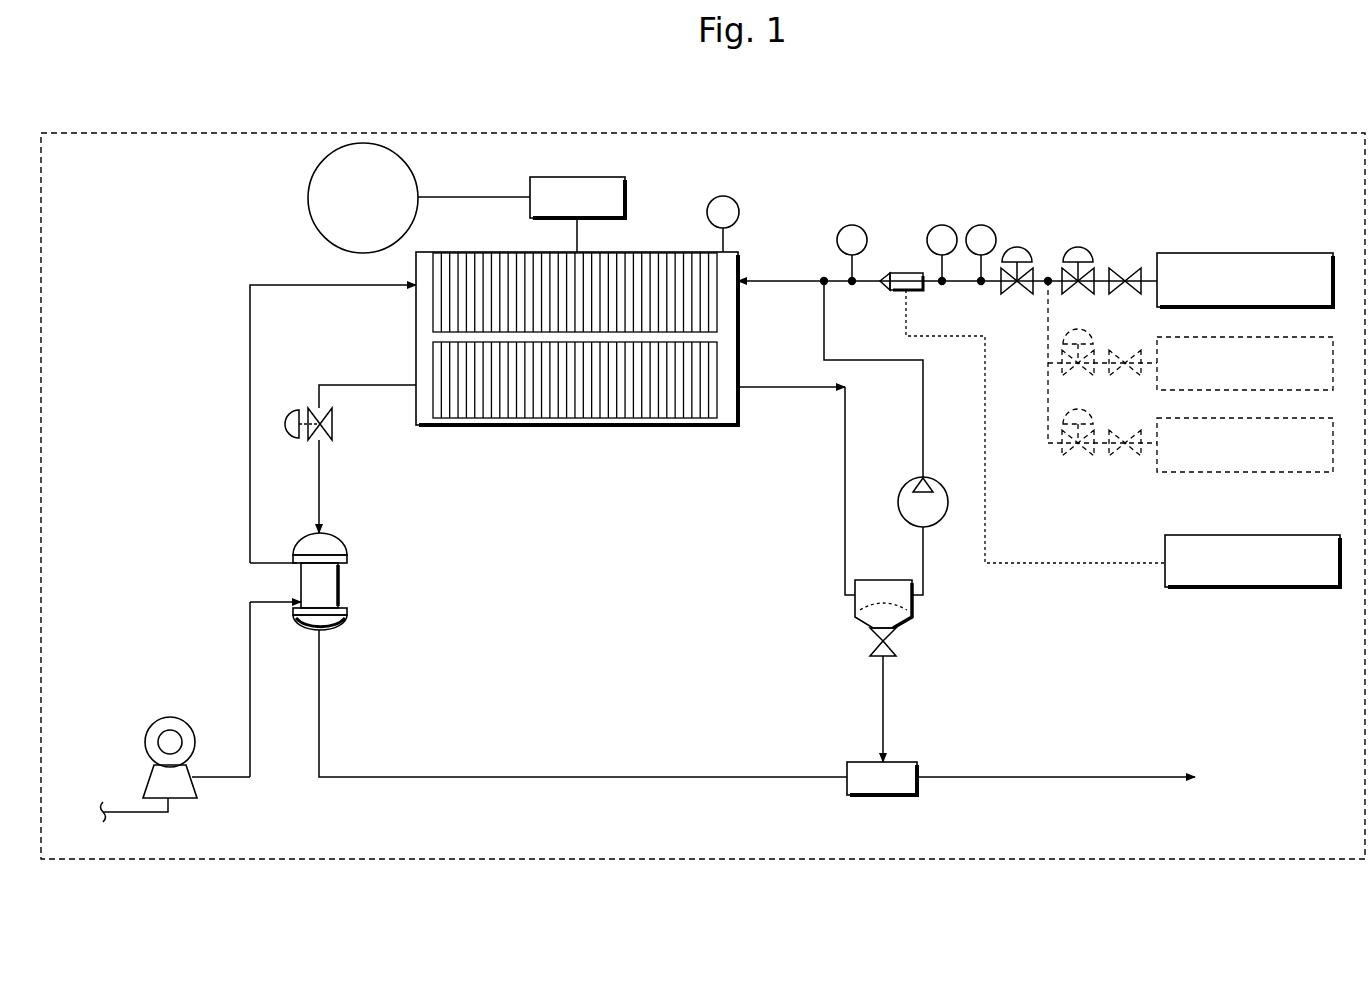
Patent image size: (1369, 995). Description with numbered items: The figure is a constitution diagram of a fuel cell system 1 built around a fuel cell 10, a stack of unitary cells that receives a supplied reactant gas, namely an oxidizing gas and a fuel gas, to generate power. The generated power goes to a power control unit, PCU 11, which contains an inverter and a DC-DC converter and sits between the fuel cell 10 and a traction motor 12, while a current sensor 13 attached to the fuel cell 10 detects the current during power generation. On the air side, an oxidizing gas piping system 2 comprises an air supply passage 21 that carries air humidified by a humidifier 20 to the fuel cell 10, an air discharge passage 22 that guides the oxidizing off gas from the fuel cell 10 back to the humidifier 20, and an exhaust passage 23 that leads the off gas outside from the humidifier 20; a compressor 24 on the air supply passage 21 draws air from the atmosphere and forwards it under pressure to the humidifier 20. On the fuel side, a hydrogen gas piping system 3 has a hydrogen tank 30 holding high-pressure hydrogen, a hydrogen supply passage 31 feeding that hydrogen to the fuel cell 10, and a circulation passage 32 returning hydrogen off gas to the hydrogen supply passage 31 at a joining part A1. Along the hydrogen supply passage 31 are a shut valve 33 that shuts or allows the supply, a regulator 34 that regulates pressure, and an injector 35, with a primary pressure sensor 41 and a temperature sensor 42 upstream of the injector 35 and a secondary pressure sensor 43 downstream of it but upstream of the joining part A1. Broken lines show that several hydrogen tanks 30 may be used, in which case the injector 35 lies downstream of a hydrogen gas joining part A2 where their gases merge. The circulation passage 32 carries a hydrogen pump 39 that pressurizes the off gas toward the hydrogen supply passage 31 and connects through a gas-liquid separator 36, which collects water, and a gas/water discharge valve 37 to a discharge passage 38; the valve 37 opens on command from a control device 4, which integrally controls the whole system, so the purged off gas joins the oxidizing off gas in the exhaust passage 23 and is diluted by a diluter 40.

The fuel cell system 1 is at (566, 129).
The oxidizing gas piping system 2 is at (343, 567).
The hydrogen gas piping system 3 is at (843, 521).
The control device 4 is at (1250, 535).
The fuel cell 10 is at (684, 427).
The power control unit (PCU) 11 is at (628, 207).
The traction motor 12 is at (310, 203).
The current sensor 13 is at (729, 197).
The humidifier 20 is at (341, 594).
The air supply passage 21 is at (250, 508).
The air discharge passage 22 is at (322, 488).
The exhaust passage 23 is at (776, 776).
The compressor 24 is at (178, 718).
The hydrogen tank 30 is at (1281, 254).
The hydrogen supply passage 31 is at (773, 280).
The circulation passage 32 is at (843, 540).
The shut valve 33 is at (1121, 272).
The regulator 34 is at (1018, 246).
The injector 35 is at (908, 272).
The gas-liquid separator 36 is at (866, 579).
The gas/water discharge valve 37 is at (878, 645).
The discharge passage 38 is at (886, 714).
The hydrogen pump 39 is at (914, 478).
The diluter 40 is at (920, 770).
The primary pressure sensor 41 is at (940, 226).
The temperature sensor 42 is at (982, 226).
The secondary pressure sensor 43 is at (848, 226).
The joining part A1 is at (822, 286).
The hydrogen gas joining part A2 is at (1047, 286).